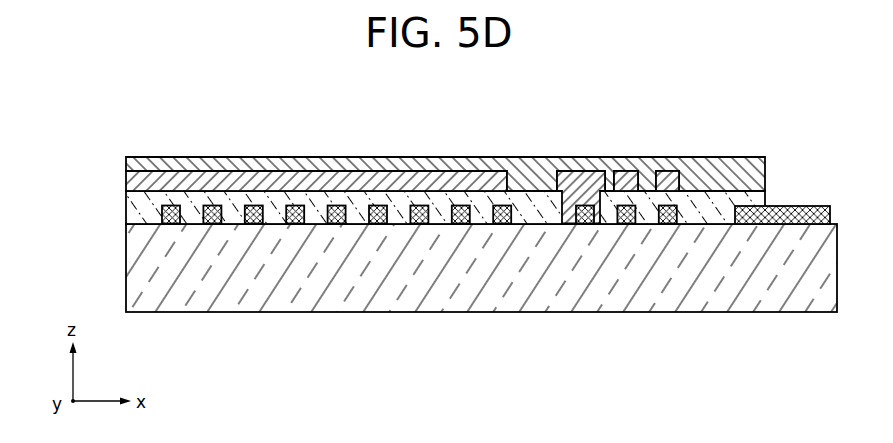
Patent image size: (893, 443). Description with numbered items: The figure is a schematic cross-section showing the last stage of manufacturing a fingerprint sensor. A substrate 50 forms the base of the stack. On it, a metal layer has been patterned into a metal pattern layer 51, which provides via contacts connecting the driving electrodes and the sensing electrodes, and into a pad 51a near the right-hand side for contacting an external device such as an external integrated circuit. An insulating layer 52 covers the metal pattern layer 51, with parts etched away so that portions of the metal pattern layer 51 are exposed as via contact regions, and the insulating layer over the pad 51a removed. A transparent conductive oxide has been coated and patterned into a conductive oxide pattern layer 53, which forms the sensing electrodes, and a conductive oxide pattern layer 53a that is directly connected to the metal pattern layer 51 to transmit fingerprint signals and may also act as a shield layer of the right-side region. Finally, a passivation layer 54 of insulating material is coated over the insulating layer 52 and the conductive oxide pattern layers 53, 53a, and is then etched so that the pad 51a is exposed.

The substrate 50 is at (140, 268).
The metal pattern layer 51 is at (168, 205).
The pad 51a is at (793, 207).
The insulating layer 52 is at (135, 211).
The conductive oxide pattern layer 53 is at (132, 180).
The conductive oxide pattern layer 53a is at (579, 176).
The passivation layer 54 is at (127, 161).